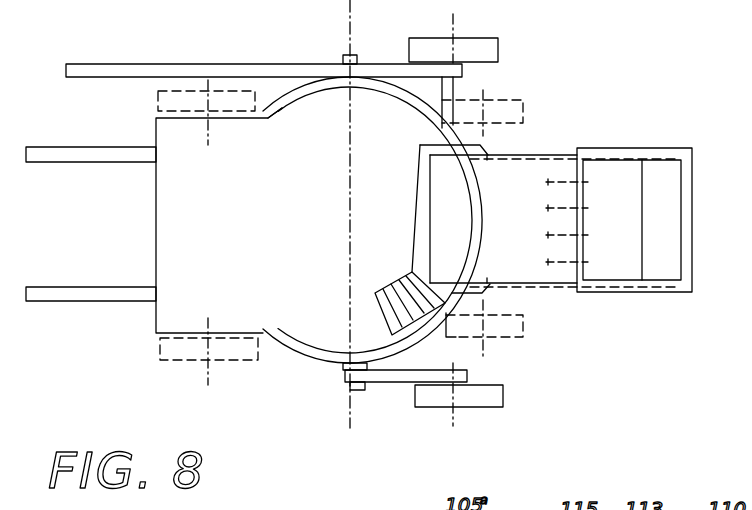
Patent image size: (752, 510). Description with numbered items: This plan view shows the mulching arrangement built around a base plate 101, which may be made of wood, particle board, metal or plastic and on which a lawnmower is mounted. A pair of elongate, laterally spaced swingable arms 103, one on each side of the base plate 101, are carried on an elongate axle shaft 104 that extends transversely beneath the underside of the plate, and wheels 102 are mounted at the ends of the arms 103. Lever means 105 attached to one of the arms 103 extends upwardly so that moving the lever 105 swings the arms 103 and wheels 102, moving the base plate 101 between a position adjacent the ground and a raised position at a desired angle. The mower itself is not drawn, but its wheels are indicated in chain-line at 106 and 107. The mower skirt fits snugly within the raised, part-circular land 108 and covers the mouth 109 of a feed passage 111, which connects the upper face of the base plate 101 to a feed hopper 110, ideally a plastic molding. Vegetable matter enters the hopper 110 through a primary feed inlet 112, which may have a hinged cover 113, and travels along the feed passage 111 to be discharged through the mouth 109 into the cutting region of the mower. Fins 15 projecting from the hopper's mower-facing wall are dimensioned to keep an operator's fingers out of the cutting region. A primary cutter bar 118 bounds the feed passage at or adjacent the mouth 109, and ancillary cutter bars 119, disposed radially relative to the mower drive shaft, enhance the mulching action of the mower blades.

The base plate 101 is at (167, 253).
The wheels 102 is at (498, 50).
The swingable arms 103 is at (385, 63).
The axle shaft 104 is at (350, 328).
The lever means 105 is at (78, 70).
The mower wheel 106 is at (178, 93).
The mower wheel 107 is at (515, 103).
The part-circular land 108 is at (278, 105).
The mouth of feed passage 109 is at (447, 188).
The feed hopper 110 is at (633, 352).
The feed passage 111 is at (513, 170).
The primary feed inlet 112 is at (602, 173).
The hinged cover 113 is at (693, 272).
The fins 15 is at (563, 256).
The primary cutter bar 118 is at (410, 242).
The ancillary cutter bars 119 is at (380, 308).